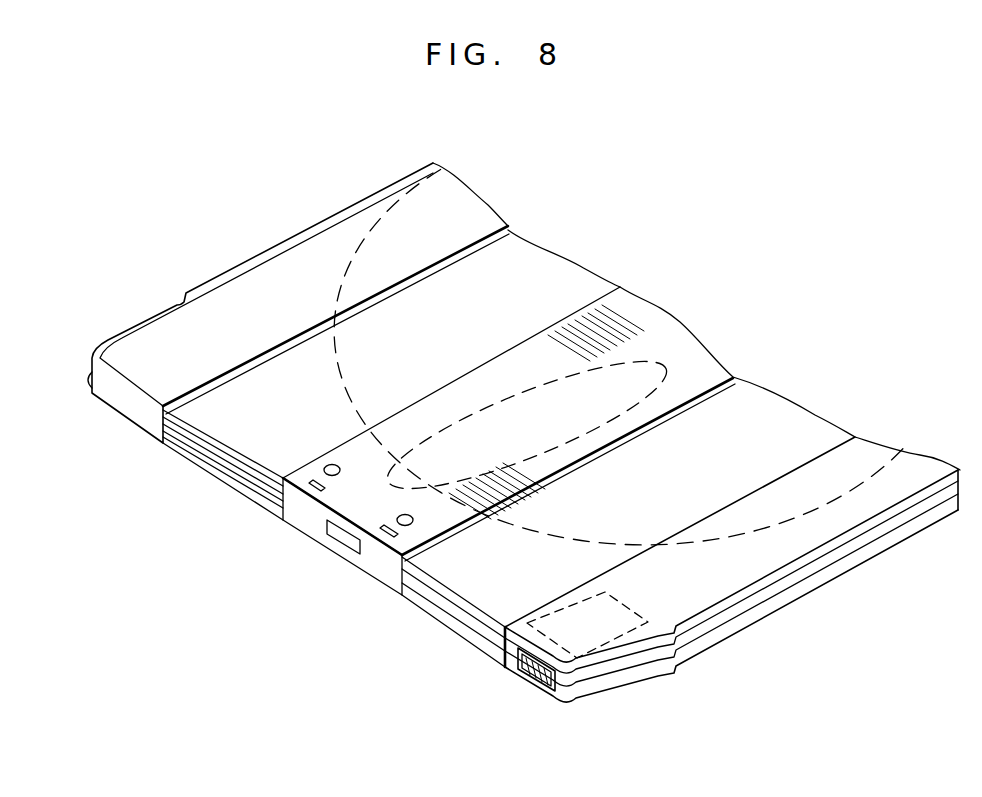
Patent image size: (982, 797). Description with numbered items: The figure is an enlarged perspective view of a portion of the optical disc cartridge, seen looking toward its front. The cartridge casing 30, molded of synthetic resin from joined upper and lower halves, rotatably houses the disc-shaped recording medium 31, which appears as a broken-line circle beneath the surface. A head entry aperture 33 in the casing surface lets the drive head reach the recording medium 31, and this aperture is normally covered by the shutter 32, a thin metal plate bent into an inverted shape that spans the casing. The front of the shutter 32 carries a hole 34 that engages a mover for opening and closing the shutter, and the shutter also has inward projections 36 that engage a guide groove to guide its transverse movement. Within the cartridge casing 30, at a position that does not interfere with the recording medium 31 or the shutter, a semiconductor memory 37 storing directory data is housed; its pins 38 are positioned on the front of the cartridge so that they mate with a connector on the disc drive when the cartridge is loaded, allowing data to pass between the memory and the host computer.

The cartridge casing 30 is at (580, 708).
The disc-shaped recording medium 31 is at (880, 472).
The shutter 32 is at (630, 308).
The head entry aperture 33 is at (652, 350).
The hole 34 is at (338, 537).
The inward projections 36 is at (384, 533).
The semiconductor memory 37 is at (616, 632).
The pins 38 is at (524, 672).